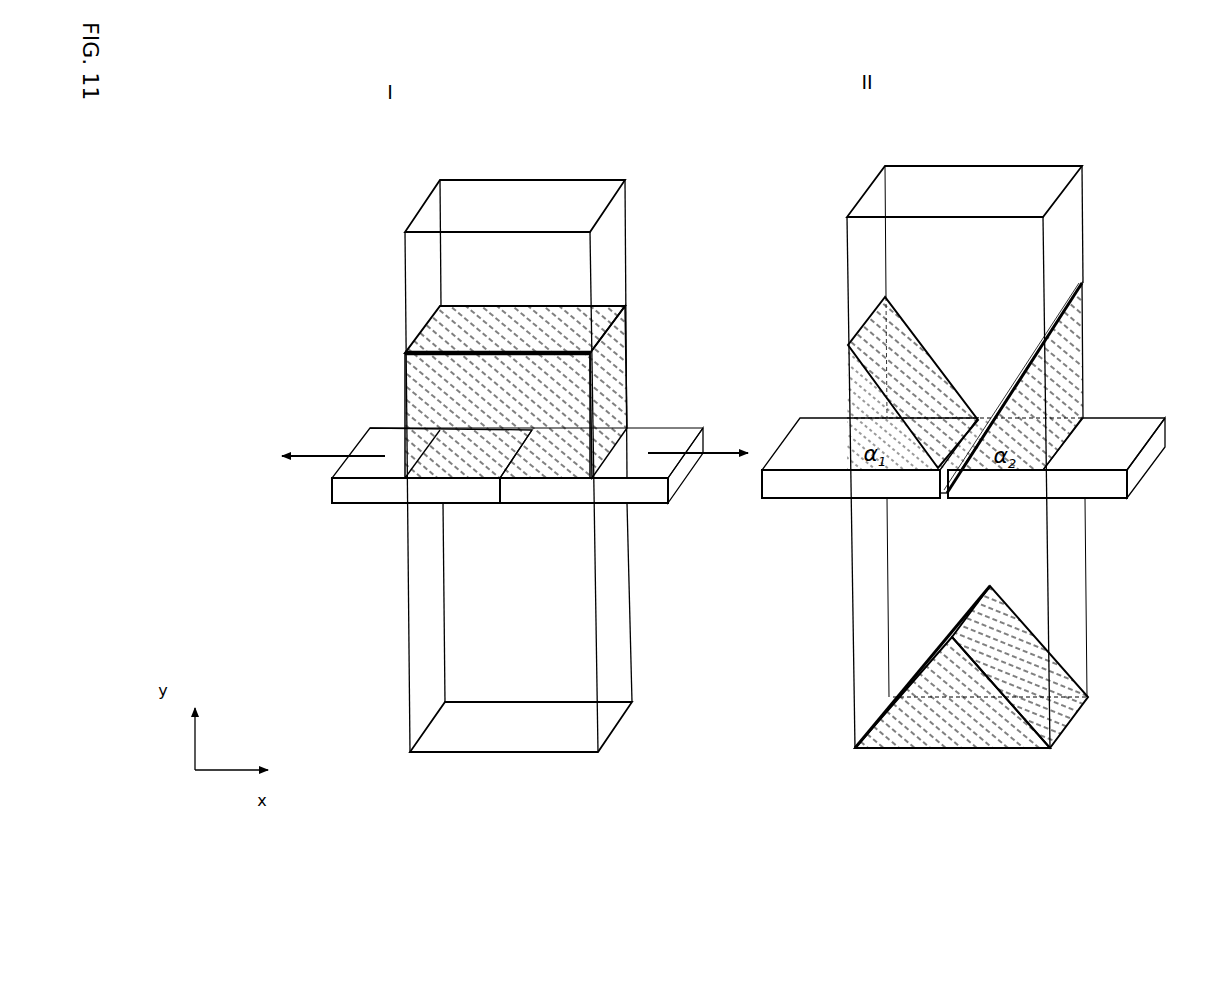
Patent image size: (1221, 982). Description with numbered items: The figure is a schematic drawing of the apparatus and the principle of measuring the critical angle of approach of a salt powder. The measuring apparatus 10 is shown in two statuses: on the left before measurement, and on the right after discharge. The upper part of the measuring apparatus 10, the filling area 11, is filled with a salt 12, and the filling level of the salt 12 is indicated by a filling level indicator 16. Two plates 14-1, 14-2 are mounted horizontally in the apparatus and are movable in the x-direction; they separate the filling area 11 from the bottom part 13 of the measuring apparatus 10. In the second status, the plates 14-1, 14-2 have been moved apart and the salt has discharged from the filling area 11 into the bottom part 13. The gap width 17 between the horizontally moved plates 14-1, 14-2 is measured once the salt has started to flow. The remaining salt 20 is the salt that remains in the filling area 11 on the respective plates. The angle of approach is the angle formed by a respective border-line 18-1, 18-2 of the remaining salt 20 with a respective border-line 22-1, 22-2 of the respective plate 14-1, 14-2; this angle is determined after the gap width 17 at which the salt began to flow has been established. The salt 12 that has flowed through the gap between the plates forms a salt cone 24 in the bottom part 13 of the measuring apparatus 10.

The measuring apparatus 10 is at (383, 210).
The filling area 11 is at (557, 192).
The salt 12 is at (422, 392).
The bottom part 13 is at (623, 665).
The plate 14-1 is at (375, 437).
The plate 14-2 is at (652, 427).
The filling level indicator 16 is at (523, 340).
The gap width 17 is at (943, 505).
The border-line of the remaining salt 18-1 is at (857, 362).
The border-line of the remaining salt 18-2 is at (990, 407).
The remaining salt 20 is at (848, 412).
The border-line of the plate 22-1 is at (783, 470).
The border-line of the plate 22-2 is at (1065, 473).
The salt cone 24 is at (1068, 683).